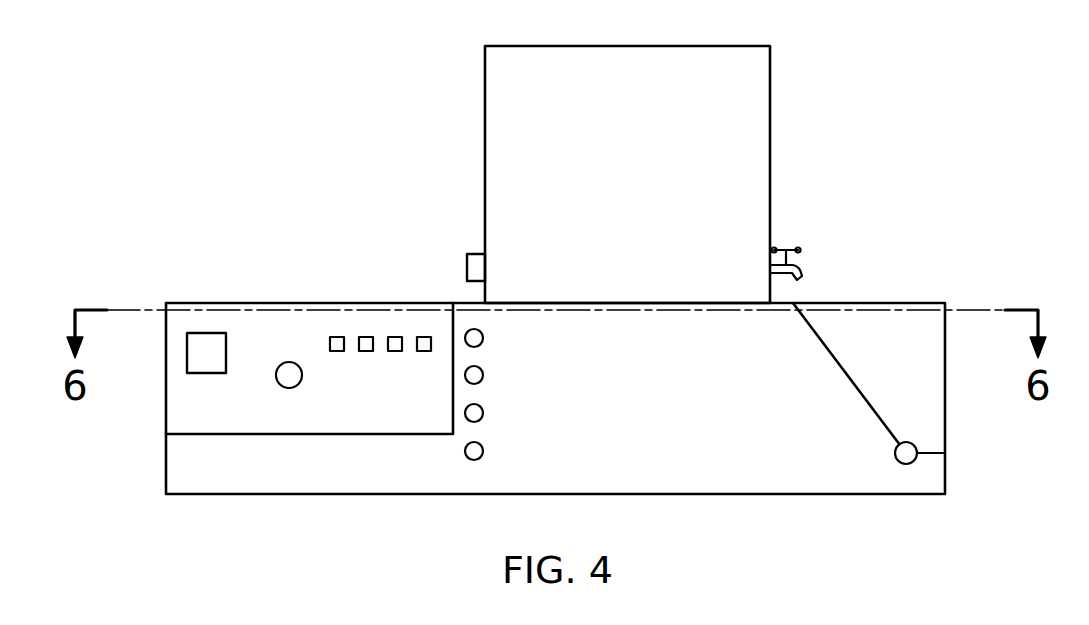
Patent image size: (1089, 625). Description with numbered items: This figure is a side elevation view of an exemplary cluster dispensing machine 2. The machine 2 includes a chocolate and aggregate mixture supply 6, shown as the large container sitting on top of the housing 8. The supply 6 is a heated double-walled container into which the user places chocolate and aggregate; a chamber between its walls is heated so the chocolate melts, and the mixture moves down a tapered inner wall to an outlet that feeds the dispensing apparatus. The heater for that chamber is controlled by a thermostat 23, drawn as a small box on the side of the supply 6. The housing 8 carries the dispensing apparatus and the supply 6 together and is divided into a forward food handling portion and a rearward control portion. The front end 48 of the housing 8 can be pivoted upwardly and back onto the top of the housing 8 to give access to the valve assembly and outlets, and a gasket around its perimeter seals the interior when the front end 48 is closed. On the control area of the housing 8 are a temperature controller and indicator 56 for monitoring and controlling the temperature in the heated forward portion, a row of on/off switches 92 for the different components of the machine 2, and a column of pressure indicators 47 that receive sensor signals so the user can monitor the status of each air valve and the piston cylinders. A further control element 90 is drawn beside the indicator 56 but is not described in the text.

The cluster dispensing machine 2 is at (867, 171).
The chocolate and aggregate mixture supply 6 is at (610, 174).
The housing 8 is at (309, 334).
The thermostat 23 is at (467, 266).
The pressure indicators 47 is at (483, 338).
The front end 48 is at (893, 320).
The indicator 56 is at (226, 348).
The control knob 90 is at (276, 380).
The on/off switches 92 is at (424, 352).